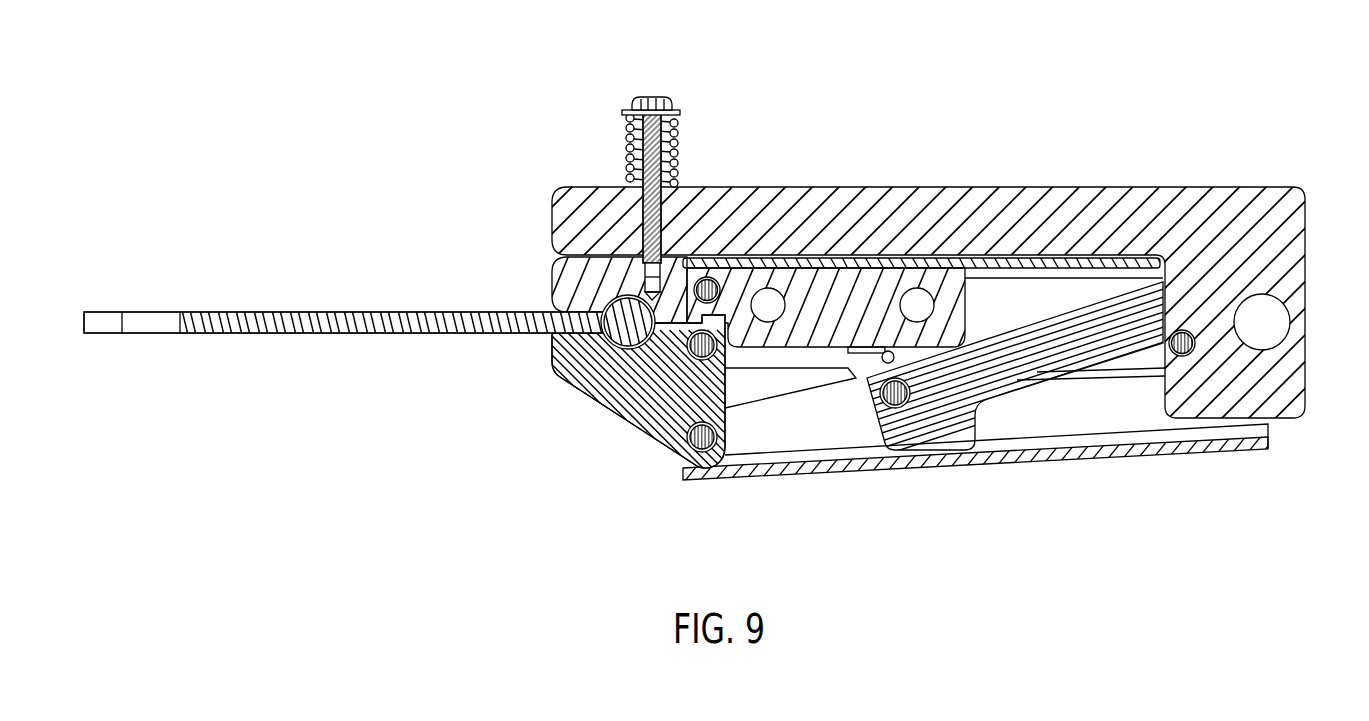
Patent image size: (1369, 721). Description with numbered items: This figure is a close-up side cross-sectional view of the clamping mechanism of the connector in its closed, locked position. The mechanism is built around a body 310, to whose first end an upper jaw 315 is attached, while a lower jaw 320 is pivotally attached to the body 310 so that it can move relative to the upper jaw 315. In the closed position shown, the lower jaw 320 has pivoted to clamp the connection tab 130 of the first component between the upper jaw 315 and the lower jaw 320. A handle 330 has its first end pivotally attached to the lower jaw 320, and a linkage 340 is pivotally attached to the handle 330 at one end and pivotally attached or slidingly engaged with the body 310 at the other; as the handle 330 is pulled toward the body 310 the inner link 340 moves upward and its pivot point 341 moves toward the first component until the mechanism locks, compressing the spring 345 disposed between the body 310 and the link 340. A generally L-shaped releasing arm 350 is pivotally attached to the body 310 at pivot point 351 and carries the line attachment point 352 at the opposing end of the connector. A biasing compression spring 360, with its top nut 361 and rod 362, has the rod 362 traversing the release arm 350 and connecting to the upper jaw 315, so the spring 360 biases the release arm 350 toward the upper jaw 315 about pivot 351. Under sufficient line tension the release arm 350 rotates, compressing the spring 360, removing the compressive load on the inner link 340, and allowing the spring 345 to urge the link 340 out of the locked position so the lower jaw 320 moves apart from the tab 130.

The connection tab 130 is at (618, 332).
The body 310 is at (993, 297).
The upper jaw 315 is at (567, 278).
The lower jaw 320 is at (642, 428).
The handle 330 is at (1087, 420).
The linkage 340 is at (988, 382).
The pivot point 341 is at (895, 397).
The spring 345 is at (858, 382).
The releasing arm 350 is at (1282, 206).
The pivot point 351 is at (1187, 343).
The connecting point 352 is at (1274, 326).
The biasing compression spring 360 is at (676, 145).
The top nut 361 is at (655, 102).
The rod 362 is at (653, 215).